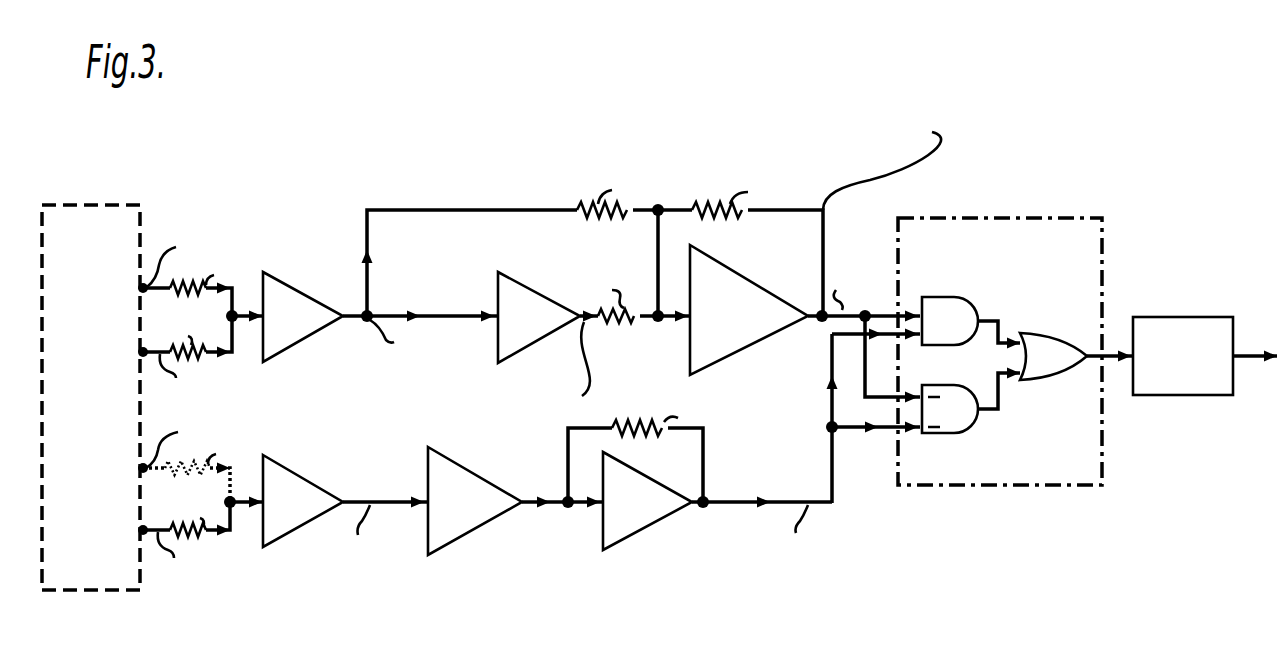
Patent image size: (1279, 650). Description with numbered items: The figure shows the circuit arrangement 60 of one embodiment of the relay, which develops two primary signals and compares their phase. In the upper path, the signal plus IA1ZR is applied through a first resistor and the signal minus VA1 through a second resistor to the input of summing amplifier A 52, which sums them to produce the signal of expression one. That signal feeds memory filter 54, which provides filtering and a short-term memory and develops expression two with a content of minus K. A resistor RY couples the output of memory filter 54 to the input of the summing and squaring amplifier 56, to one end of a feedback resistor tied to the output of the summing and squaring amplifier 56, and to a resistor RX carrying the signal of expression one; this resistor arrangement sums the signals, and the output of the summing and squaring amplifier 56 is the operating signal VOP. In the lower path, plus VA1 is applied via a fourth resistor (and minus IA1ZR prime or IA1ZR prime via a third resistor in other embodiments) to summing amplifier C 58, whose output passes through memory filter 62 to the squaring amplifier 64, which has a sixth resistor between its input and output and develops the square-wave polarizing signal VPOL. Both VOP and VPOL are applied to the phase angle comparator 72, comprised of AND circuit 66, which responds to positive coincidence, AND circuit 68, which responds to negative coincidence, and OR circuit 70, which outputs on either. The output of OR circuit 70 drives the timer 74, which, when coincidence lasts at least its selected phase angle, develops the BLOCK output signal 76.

The summing amplifier A 52 is at (304, 292).
The memory filter 54 is at (521, 286).
The summing and squaring amplifier 56 is at (722, 350).
The summing amplifier C 58 is at (285, 535).
The circuit arrangement 60 is at (1050, 158).
The memory filter 62 is at (475, 528).
The squaring amplifier 64 is at (642, 528).
The AND circuit 66 is at (948, 297).
The AND circuit 68 is at (956, 433).
The OR circuit 70 is at (1048, 333).
The phase angle comparator 72 is at (1069, 388).
The timer 74 is at (1192, 393).
The BLOCK signal 76 is at (1236, 352).